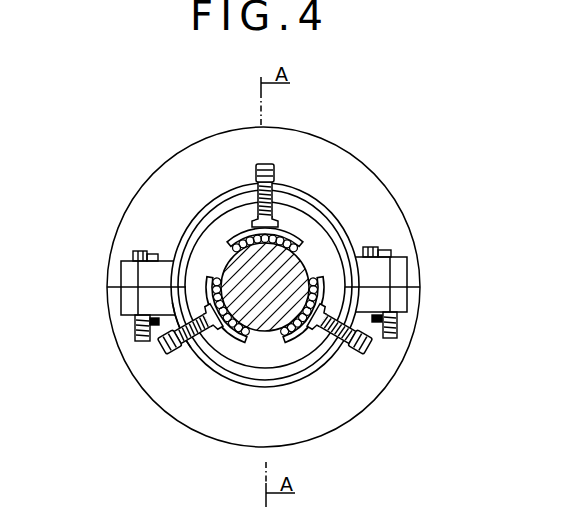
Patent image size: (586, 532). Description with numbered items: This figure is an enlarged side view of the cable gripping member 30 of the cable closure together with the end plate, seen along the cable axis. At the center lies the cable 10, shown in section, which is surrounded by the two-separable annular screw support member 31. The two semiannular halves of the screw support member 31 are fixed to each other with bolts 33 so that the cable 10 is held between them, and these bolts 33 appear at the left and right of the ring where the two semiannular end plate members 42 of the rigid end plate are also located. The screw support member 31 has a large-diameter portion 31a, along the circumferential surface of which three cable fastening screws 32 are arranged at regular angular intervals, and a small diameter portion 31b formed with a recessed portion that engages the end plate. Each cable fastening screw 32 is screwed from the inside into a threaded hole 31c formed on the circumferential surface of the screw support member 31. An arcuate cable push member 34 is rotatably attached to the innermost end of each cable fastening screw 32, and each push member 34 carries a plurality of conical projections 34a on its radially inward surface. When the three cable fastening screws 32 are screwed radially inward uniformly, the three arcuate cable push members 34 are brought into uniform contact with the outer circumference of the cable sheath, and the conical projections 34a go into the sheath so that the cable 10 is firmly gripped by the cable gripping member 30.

The cable 10 is at (293, 255).
The cable gripping member 30 is at (278, 282).
The screw support member 31 is at (318, 201).
The large-diameter portion 31a is at (218, 372).
The small diameter portion 31b is at (228, 205).
The threaded hole 31c is at (170, 322).
The cable fastening screw 32 is at (270, 168).
The bolt 33 is at (378, 247).
The arcuate cable push member 34 is at (210, 273).
The conical projection 34a is at (230, 253).
The semiannular end plate member 42 is at (407, 334).